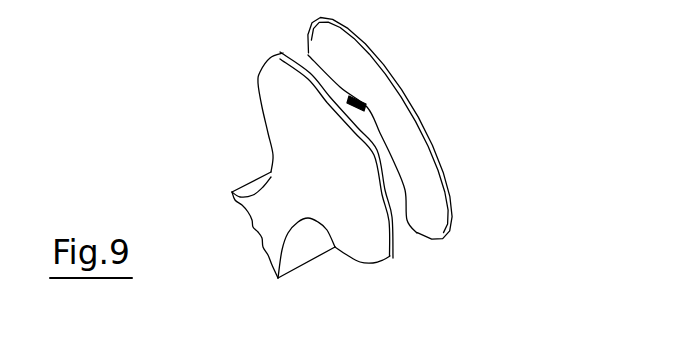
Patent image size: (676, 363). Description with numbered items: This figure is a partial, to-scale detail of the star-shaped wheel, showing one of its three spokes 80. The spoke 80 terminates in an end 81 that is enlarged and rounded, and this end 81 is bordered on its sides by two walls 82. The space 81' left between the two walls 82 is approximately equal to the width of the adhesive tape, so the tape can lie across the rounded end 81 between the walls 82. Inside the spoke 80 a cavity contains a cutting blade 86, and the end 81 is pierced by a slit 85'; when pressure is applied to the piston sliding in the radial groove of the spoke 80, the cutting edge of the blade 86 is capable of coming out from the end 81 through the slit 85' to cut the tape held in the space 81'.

The spoke 80 is at (240, 162).
The end of the spoke 81 is at (430, 129).
The space between two walls 81' is at (422, 160).
The wall 82 is at (430, 183).
The slit 85' is at (406, 142).
The cutting blade 86 is at (362, 105).